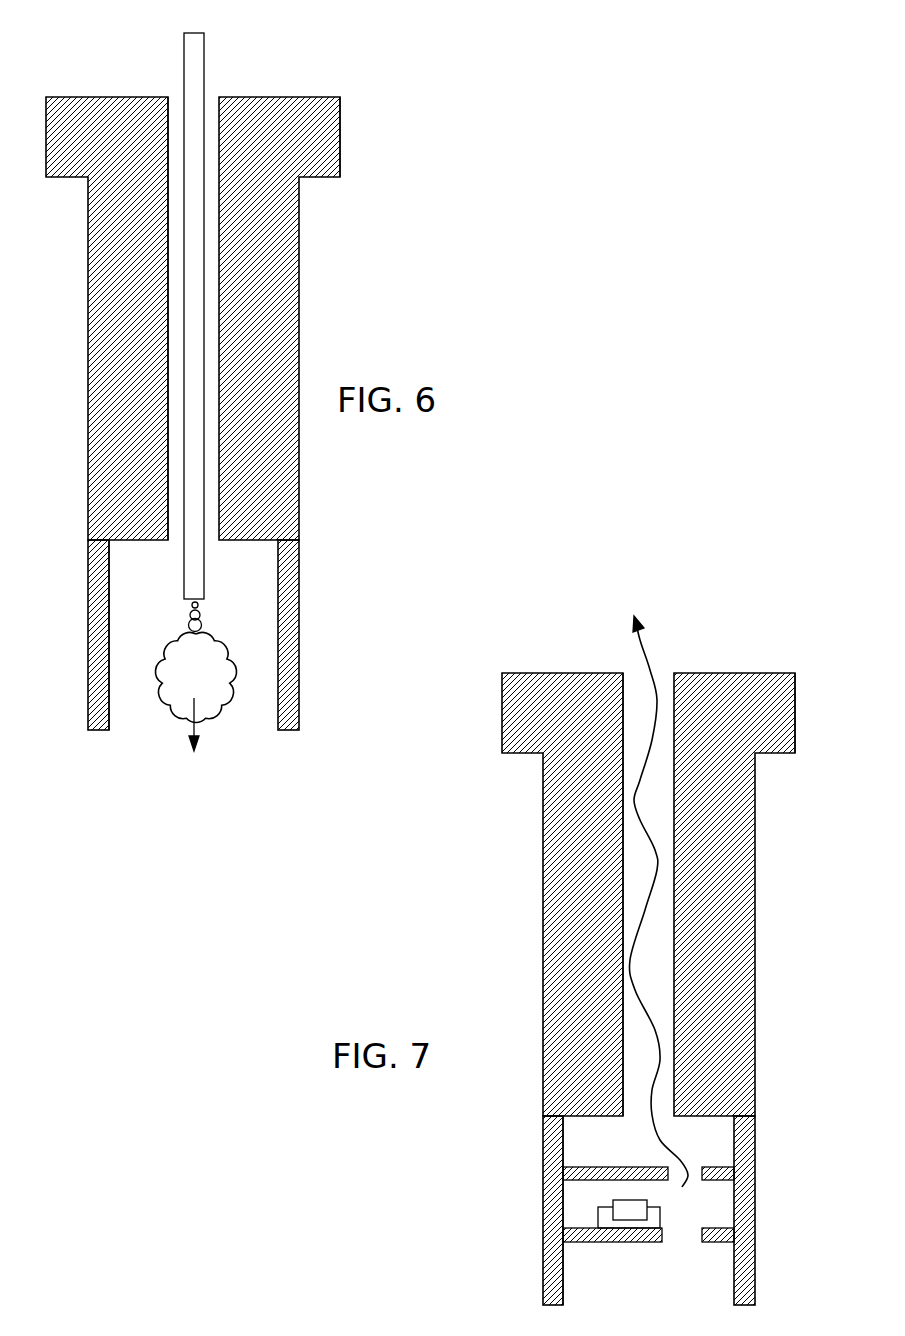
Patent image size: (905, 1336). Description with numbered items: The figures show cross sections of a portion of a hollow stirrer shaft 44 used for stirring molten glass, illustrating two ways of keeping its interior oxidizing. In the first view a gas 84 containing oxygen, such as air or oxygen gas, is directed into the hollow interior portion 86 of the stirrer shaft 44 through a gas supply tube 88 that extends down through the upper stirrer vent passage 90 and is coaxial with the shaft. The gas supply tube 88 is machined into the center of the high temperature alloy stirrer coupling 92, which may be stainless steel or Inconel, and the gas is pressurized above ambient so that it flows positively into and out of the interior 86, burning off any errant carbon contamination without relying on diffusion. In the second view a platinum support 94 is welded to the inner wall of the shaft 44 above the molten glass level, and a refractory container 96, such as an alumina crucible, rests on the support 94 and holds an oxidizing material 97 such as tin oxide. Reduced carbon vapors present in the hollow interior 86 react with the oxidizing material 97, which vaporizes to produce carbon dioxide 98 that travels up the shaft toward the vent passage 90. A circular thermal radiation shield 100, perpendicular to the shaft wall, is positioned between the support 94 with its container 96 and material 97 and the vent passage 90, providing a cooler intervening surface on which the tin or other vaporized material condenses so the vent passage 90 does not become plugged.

In FIG. 6, the stirrer shaft 44 is at (360, 322).
In FIG. 7, the stirrer shaft 44 is at (475, 923).
In FIG. 6, the gas containing oxygen 84 is at (163, 697).
In FIG. 6, the hollow interior portion 86 is at (258, 604).
In FIG. 7, the hollow interior portion 86 is at (634, 1152).
In FIG. 6, the gas supply tube 88 is at (203, 65).
In FIG. 6, the upper stirrer vent passage 90 is at (177, 107).
In FIG. 7, the upper stirrer vent passage 90 is at (635, 680).
In FIG. 6, the stirrer coupling 92 is at (300, 259).
In FIG. 7, the stirrer coupling 92 is at (755, 873).
In FIG. 7, the platinum support 94 is at (635, 1243).
In FIG. 7, the refractory container 96 is at (598, 1217).
In FIG. 7, the oxidizing material 97 is at (632, 1205).
In FIG. 7, the CO2 98 is at (650, 642).
In FIG. 7, the thermal radiation shield 100 is at (585, 1166).